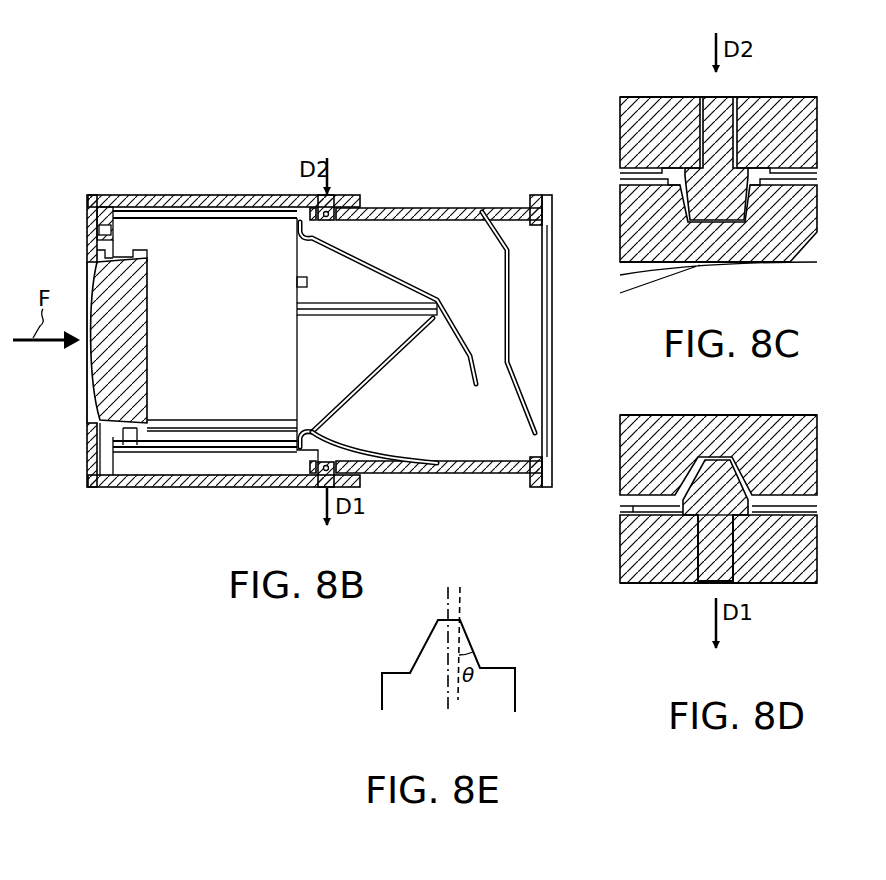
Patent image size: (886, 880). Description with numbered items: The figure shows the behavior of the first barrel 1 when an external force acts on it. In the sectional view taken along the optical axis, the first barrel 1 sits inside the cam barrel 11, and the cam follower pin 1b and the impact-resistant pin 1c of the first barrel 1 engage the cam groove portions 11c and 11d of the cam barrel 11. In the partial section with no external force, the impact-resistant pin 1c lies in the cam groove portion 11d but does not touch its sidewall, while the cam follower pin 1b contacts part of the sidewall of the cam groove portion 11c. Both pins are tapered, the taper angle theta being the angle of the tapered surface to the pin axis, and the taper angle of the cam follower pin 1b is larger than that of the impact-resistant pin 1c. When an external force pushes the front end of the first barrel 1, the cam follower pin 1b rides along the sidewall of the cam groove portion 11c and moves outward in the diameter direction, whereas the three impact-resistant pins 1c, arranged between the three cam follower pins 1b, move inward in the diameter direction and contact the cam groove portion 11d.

In FIG. 8B, the first barrel 1 is at (229, 194).
In FIG. 8C, the first barrel 1 is at (648, 96).
In FIG. 8D, the first barrel 1 is at (782, 585).
In FIG. 8B, the cam follower pin 1b is at (324, 486).
In FIG. 8D, the cam follower pin 1b is at (698, 584).
In FIG. 8B, the impact-resistant pin 1c is at (331, 201).
In FIG. 8C, the impact-resistant pin 1c is at (737, 98).
In FIG. 8B, the cam barrel 11 is at (468, 207).
In FIG. 8C, the cam barrel 11 is at (795, 233).
In FIG. 8D, the cam barrel 11 is at (668, 432).
In FIG. 8D, the cam groove portion 11c is at (733, 415).
In FIG. 8C, the cam groove portion 11d is at (697, 264).